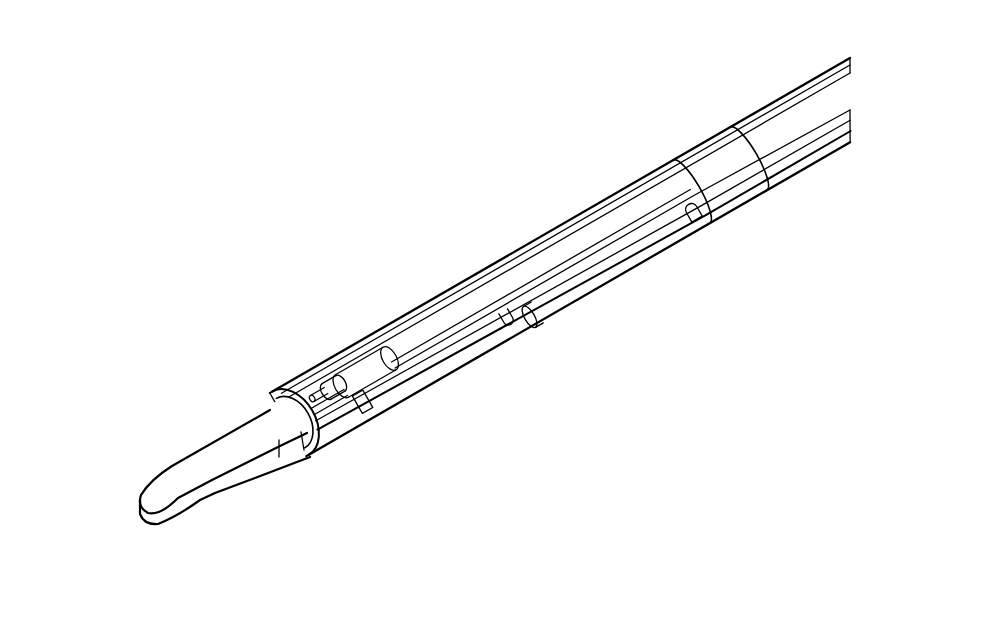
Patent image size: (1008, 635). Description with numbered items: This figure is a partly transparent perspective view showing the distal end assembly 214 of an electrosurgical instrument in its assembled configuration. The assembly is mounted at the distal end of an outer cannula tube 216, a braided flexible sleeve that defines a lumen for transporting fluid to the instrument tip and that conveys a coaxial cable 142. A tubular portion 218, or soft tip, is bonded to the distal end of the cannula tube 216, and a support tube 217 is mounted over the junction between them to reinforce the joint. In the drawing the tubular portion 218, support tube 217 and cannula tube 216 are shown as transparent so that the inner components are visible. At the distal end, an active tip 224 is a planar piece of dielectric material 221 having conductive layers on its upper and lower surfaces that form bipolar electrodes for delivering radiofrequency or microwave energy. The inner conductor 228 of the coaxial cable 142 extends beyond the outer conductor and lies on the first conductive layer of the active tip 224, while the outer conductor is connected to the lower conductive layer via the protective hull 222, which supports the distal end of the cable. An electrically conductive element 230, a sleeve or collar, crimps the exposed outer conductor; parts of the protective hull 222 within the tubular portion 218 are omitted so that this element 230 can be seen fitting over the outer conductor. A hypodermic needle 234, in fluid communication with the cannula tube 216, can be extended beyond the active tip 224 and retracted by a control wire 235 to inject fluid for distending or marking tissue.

The distal end assembly 214 is at (150, 282).
The outer cannula tube 216 is at (781, 99).
The support tube 217 is at (699, 146).
The tubular portion 218 is at (592, 208).
The coaxial cable 142 is at (440, 327).
The inner conductor 228 is at (312, 376).
The electrically conductive element 230 is at (372, 368).
The hypodermic needle 234 is at (453, 343).
The control wire 235 is at (590, 278).
The active tip 224 is at (147, 490).
The dielectric material 221 is at (190, 504).
The protective hull 222 is at (177, 524).